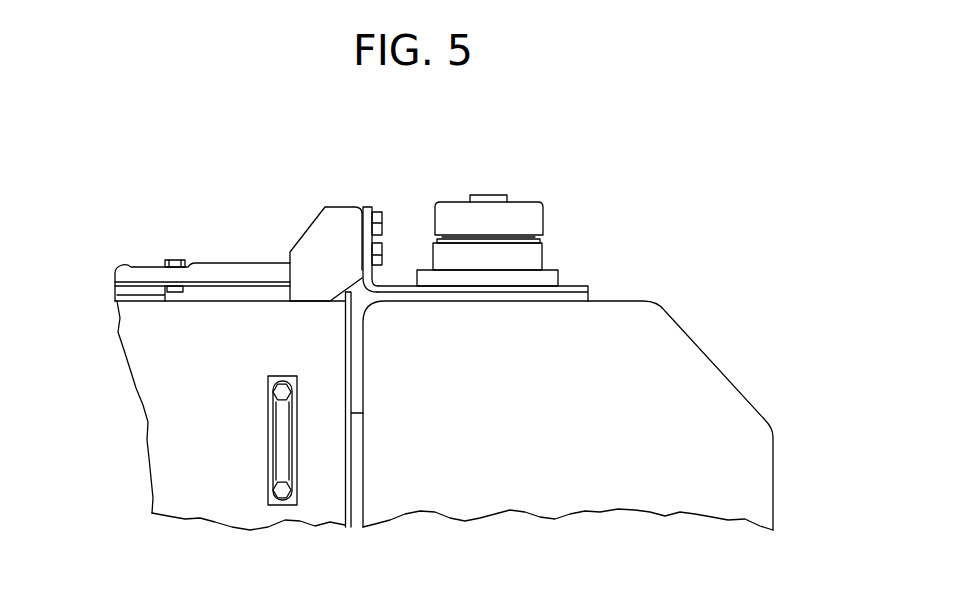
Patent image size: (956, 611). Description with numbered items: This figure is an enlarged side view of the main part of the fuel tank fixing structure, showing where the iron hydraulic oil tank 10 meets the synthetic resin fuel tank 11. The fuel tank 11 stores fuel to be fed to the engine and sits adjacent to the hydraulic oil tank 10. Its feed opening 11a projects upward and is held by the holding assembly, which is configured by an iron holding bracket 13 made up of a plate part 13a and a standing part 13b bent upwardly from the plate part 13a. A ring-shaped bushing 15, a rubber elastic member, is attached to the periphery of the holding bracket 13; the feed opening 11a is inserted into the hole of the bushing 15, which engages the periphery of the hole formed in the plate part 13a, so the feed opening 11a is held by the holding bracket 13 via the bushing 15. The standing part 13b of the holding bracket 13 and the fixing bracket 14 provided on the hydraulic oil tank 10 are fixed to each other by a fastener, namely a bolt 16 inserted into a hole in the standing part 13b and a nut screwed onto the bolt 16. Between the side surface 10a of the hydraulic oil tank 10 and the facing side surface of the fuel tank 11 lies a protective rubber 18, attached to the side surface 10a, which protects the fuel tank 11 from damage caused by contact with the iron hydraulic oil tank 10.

The hydraulic oil tank 10 is at (223, 480).
The side surface 10a is at (345, 440).
The fuel tank 11 is at (563, 453).
The feed opening 11a is at (515, 213).
The holding bracket 13 is at (593, 286).
The plate part 13a is at (572, 288).
The standing part 13b is at (368, 207).
The fixing bracket 14 is at (318, 232).
The bushing 15 is at (548, 272).
The bolt 16 is at (380, 222).
The protective rubber 18 is at (356, 487).